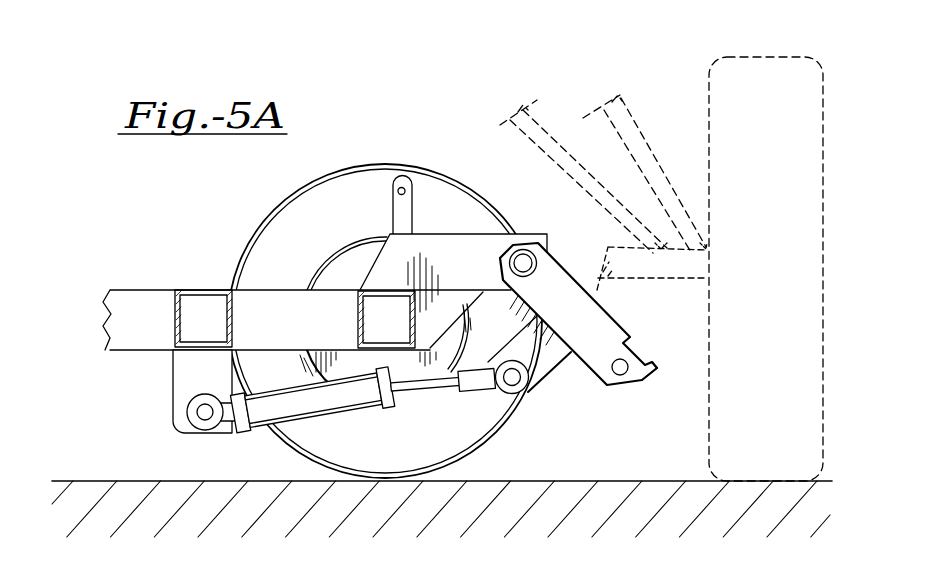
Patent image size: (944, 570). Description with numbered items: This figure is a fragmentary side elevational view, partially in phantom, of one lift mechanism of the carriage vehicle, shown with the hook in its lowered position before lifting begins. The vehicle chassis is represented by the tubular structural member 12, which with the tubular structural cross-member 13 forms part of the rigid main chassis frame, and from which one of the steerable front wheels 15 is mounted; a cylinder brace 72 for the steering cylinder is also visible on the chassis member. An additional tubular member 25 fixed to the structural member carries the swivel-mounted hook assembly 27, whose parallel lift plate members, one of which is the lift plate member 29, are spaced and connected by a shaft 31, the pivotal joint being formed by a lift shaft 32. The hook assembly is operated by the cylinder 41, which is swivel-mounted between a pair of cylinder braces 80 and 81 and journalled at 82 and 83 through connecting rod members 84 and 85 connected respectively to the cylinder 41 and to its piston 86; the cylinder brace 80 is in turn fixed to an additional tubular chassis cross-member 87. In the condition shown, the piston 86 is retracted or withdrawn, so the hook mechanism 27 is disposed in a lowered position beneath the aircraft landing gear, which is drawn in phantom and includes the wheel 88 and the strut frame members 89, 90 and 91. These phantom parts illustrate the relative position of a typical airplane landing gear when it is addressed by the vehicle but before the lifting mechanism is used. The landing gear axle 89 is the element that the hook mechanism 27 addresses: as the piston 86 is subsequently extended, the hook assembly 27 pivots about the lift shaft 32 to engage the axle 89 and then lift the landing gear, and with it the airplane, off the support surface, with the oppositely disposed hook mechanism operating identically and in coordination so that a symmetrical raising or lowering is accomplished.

The tubular structural member 12 is at (357, 322).
The tubular structural cross-member 13 is at (130, 289).
The steerable front wheel 15 is at (282, 208).
The tubular member 25 is at (453, 246).
The hook assembly 27 is at (644, 386).
The lift plate member 29 is at (575, 376).
The shaft 31 is at (618, 377).
The lift shaft 32 is at (522, 253).
The cylinder 41 is at (328, 417).
The cylinder brace 72 is at (397, 206).
The cylinder brace 80 is at (173, 367).
The cylinder brace 81 is at (538, 386).
The journal 82 is at (200, 413).
The journal 83 is at (507, 380).
The connecting rod member 84 is at (233, 431).
The connecting rod member 85 is at (481, 366).
The piston 86 is at (412, 392).
The tubular chassis cross-member 87 is at (200, 289).
The wheel 88 is at (747, 57).
The landing gear axle 89 is at (708, 297).
The strut frame member 90 is at (541, 128).
The strut frame member 91 is at (631, 137).